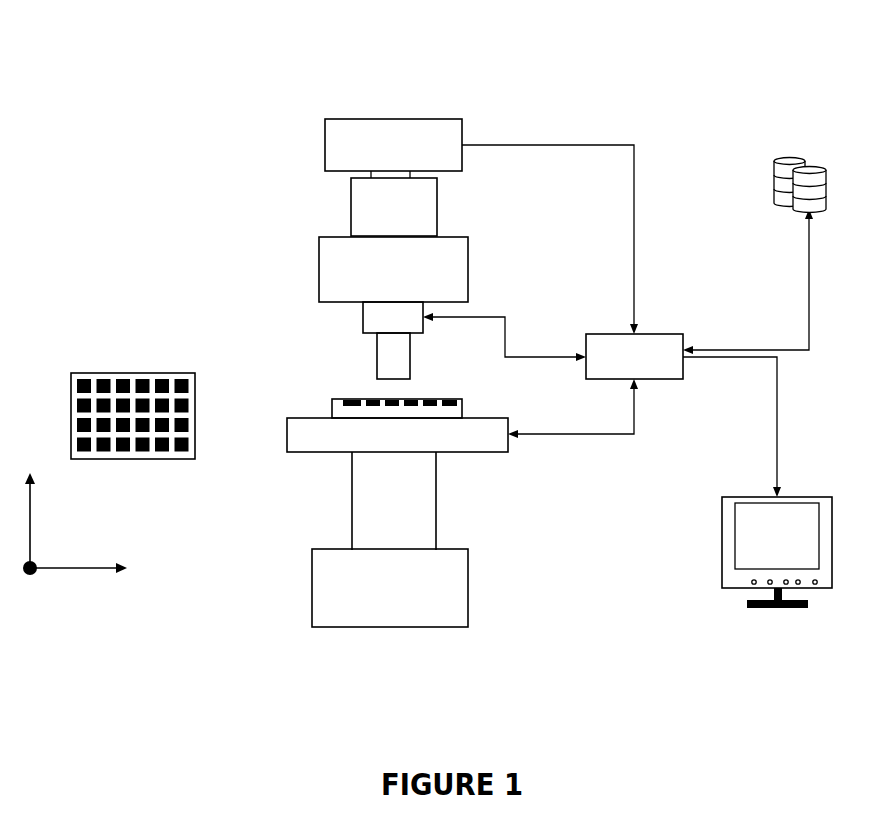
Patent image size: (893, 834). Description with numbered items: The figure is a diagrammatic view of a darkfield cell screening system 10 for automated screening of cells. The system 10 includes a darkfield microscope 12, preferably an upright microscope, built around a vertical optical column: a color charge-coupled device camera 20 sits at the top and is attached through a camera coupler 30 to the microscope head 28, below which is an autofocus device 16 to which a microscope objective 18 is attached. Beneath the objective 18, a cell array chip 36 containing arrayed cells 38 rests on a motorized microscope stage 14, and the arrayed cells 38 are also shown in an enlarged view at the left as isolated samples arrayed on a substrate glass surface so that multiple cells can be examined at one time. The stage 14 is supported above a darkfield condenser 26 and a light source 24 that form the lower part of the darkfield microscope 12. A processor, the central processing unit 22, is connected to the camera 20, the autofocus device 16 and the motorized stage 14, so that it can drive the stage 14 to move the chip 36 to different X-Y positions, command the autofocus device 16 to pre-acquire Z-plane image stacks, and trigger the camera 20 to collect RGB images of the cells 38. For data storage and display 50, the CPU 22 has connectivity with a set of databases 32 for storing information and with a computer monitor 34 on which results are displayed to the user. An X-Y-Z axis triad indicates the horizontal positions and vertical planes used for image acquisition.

The darkfield cell screening system 10 is at (216, 126).
The darkfield microscope 12 is at (423, 68).
The motorized microscope stage 14 is at (455, 445).
The autofocus device 16 is at (363, 321).
The microscope objective 18 is at (405, 348).
The color charge-coupled device (CCD) camera 20 is at (335, 119).
The central processing unit (CPU) 22 is at (653, 342).
The light source 24 is at (315, 572).
The darkfield condenser 26 is at (355, 520).
The microscope head 28 is at (319, 257).
The camera coupler 30 is at (351, 207).
The set of databases 32 is at (780, 183).
The computer monitor 34 is at (726, 540).
The cell array chip 36 is at (340, 412).
The arrayed cells 38 is at (373, 400).
The data storage and display 50 is at (779, 122).